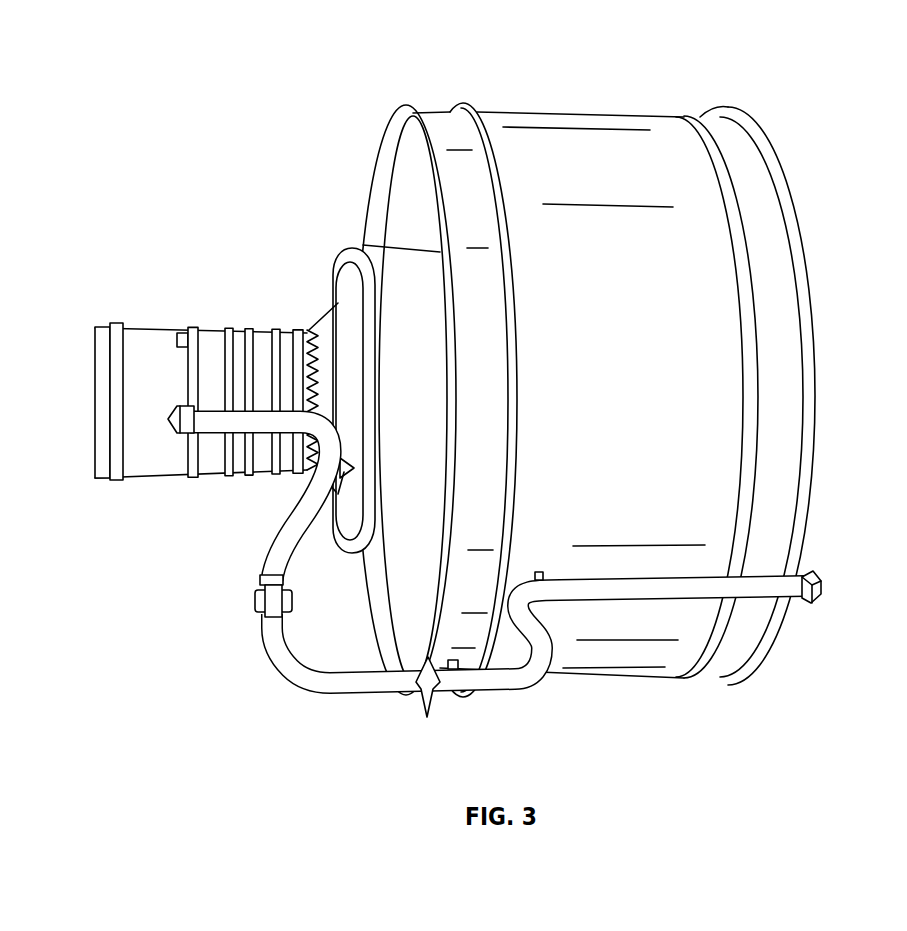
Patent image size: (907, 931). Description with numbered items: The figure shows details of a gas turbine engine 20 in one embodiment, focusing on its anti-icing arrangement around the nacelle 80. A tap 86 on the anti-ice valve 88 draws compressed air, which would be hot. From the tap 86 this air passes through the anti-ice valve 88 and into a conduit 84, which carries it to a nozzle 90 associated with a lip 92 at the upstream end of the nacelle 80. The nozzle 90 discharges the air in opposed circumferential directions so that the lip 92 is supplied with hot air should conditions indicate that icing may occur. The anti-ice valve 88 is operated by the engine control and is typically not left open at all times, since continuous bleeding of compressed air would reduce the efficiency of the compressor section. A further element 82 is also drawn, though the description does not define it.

The gas turbine engine 20 is at (828, 71).
The nacelle 80 is at (535, 138).
The nozzle 82 is at (262, 342).
The conduit 84 is at (589, 592).
The tap 86 is at (178, 415).
The anti-ice valve 88 is at (262, 600).
The nozzle 90 is at (817, 570).
The lip 92 is at (814, 467).